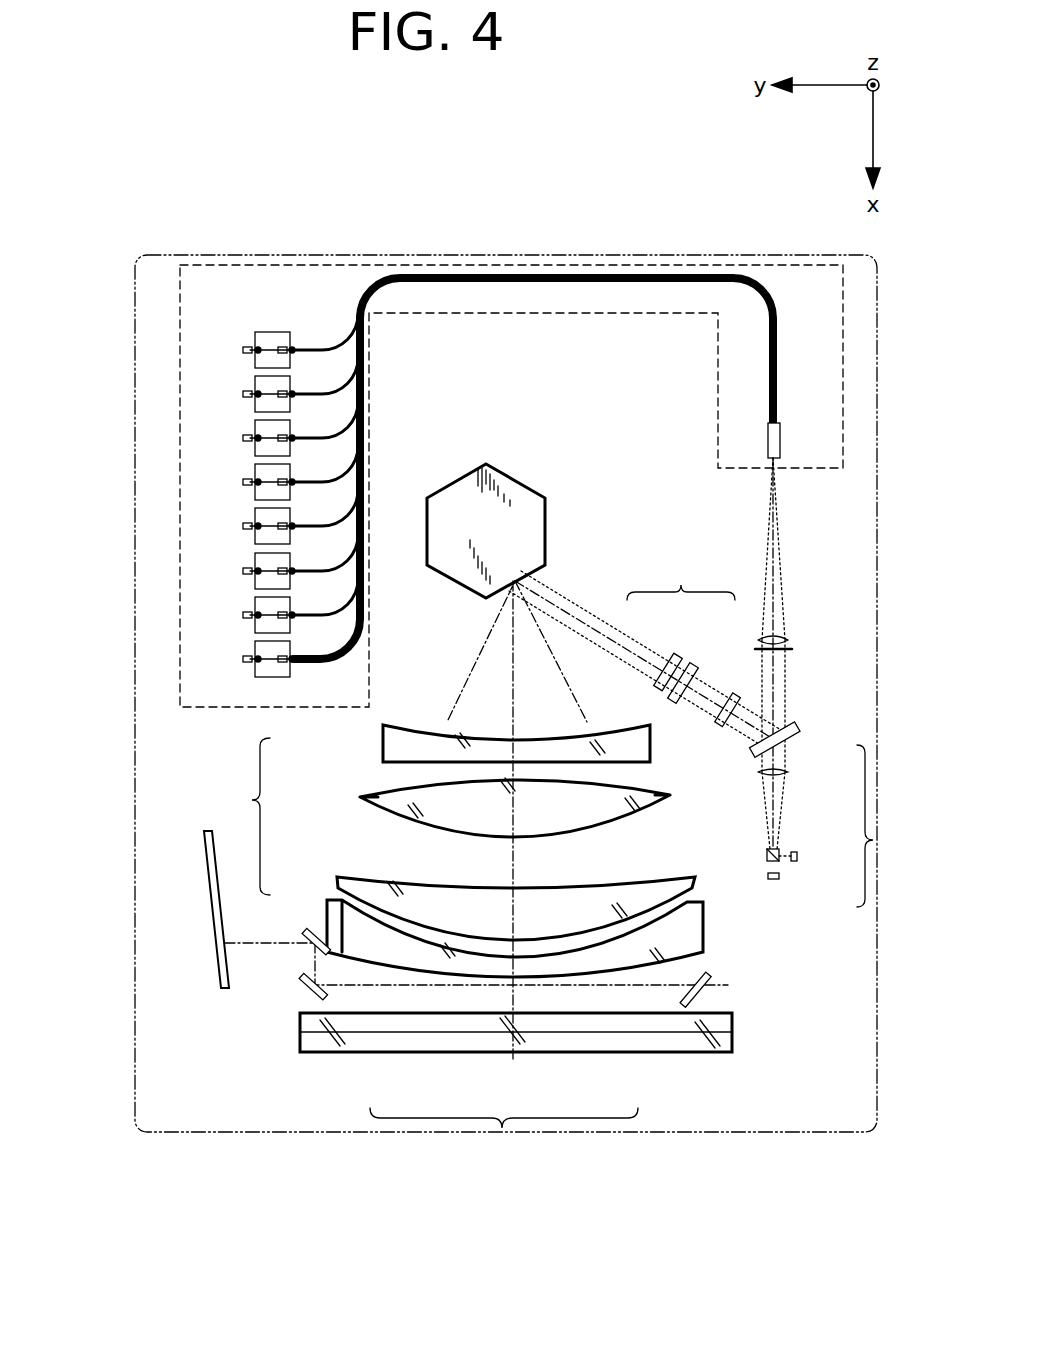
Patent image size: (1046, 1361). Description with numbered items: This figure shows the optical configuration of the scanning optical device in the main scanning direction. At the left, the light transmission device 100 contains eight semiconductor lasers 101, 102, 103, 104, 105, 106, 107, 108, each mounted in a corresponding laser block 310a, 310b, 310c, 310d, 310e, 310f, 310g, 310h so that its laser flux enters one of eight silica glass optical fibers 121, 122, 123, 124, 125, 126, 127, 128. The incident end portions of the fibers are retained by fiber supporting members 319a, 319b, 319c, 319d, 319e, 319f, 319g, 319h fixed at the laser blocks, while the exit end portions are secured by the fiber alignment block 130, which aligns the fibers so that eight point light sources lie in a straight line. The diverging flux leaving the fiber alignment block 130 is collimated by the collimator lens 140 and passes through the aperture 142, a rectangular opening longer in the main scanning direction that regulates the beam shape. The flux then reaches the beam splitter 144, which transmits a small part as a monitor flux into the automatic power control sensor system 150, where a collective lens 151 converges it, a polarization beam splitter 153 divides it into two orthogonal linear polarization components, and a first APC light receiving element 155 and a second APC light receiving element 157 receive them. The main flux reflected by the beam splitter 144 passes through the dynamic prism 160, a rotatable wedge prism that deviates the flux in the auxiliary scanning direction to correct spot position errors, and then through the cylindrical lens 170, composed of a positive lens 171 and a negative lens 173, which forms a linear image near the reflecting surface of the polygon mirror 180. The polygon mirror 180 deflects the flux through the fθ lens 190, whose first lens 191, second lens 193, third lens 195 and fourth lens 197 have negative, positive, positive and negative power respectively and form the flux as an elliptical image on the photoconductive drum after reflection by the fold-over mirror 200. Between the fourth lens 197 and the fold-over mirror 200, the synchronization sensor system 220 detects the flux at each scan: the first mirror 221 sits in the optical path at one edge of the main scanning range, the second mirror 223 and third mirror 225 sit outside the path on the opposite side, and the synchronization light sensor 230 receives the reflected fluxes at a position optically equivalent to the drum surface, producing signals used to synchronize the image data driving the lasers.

The light transmission device 100 is at (627, 316).
The semiconductor laser 101 is at (248, 644).
The semiconductor laser 102 is at (248, 600).
The semiconductor laser 103 is at (248, 556).
The semiconductor laser 104 is at (248, 511).
The semiconductor laser 105 is at (248, 467).
The semiconductor laser 106 is at (248, 423).
The semiconductor laser 107 is at (248, 379).
The semiconductor laser 108 is at (248, 335).
The silica glass optical fiber 121 is at (364, 659).
The silica glass optical fiber 122 is at (364, 615).
The silica glass optical fiber 123 is at (364, 571).
The silica glass optical fiber 124 is at (364, 526).
The silica glass optical fiber 125 is at (364, 482).
The silica glass optical fiber 126 is at (364, 438).
The silica glass optical fiber 127 is at (364, 394).
The silica glass optical fiber 128 is at (364, 350).
The fiber alignment block 130 is at (782, 440).
The collimator lens 140 is at (790, 636).
The aperture 142 is at (794, 652).
The beam splitter 144 is at (796, 727).
The automatic power control (APC) sensor system 150 is at (873, 840).
The collective lens 151 is at (790, 773).
The polarization beam splitter 153 is at (780, 850).
The first APC light receiving element 155 is at (777, 878).
The second APC light receiving element 157 is at (797, 858).
The dynamic prism 160 is at (722, 718).
The cylindrical lens 170 is at (681, 577).
The lens 171 is at (690, 672).
The lens 173 is at (673, 658).
The polygon mirror 180 is at (507, 472).
The fθ lens 190 is at (252, 800).
The first lens 191 is at (383, 745).
The second lens 193 is at (362, 797).
The third lens 195 is at (345, 878).
The fourth lens 197 is at (330, 905).
The fold-over mirror 200 is at (303, 1040).
The synchronization sensor system 220 is at (504, 1144).
The first mirror 221 is at (684, 998).
The second mirror 223 is at (325, 990).
The third mirror 225 is at (322, 958).
The synchronization light sensor 230 is at (230, 970).
The laser block 310a is at (255, 666).
The laser block 310b is at (255, 622).
The laser block 310c is at (255, 578).
The laser block 310d is at (255, 533).
The laser block 310e is at (255, 489).
The laser block 310f is at (255, 445).
The laser block 310g is at (255, 401).
The laser block 310h is at (255, 357).
The fiber supporting member 319a is at (297, 649).
The fiber supporting member 319b is at (297, 605).
The fiber supporting member 319c is at (297, 561).
The fiber supporting member 319d is at (297, 516).
The fiber supporting member 319e is at (297, 472).
The fiber supporting member 319f is at (297, 428).
The fiber supporting member 319g is at (297, 384).
The fiber supporting member 319h is at (297, 340).